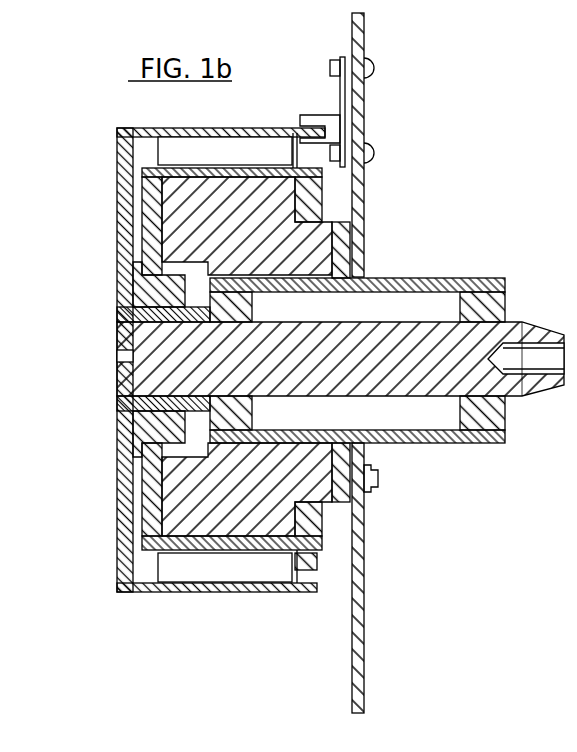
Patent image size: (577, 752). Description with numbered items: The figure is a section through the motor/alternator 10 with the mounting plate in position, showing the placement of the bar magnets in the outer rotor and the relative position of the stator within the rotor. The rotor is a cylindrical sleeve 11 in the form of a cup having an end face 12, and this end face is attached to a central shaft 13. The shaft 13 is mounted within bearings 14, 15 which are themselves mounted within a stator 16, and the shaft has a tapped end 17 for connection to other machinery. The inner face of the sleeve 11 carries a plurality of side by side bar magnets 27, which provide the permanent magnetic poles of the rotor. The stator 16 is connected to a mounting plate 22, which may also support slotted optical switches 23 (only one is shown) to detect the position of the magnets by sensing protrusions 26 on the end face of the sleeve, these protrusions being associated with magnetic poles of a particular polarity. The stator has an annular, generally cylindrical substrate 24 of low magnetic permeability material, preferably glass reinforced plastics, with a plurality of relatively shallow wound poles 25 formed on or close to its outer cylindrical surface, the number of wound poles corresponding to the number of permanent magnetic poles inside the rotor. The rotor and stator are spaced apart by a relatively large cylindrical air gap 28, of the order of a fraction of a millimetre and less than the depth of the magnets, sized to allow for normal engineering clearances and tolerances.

The motor/alternator 10 is at (97, 187).
The cylindrical sleeve 11 is at (143, 122).
The end face 12 is at (128, 284).
The central shaft 13 is at (124, 372).
The bearing 14 is at (130, 307).
The bearing 15 is at (482, 298).
The stator 16 is at (421, 446).
The tapped end 17 is at (520, 397).
The mounting plate 22 is at (357, 118).
The slotted optical switch 23 is at (301, 117).
The substrate 24 is at (298, 533).
The wound poles 25 is at (175, 528).
The protrusions 26 is at (313, 593).
The bar magnets 27 is at (197, 147).
The air gap 28 is at (308, 163).